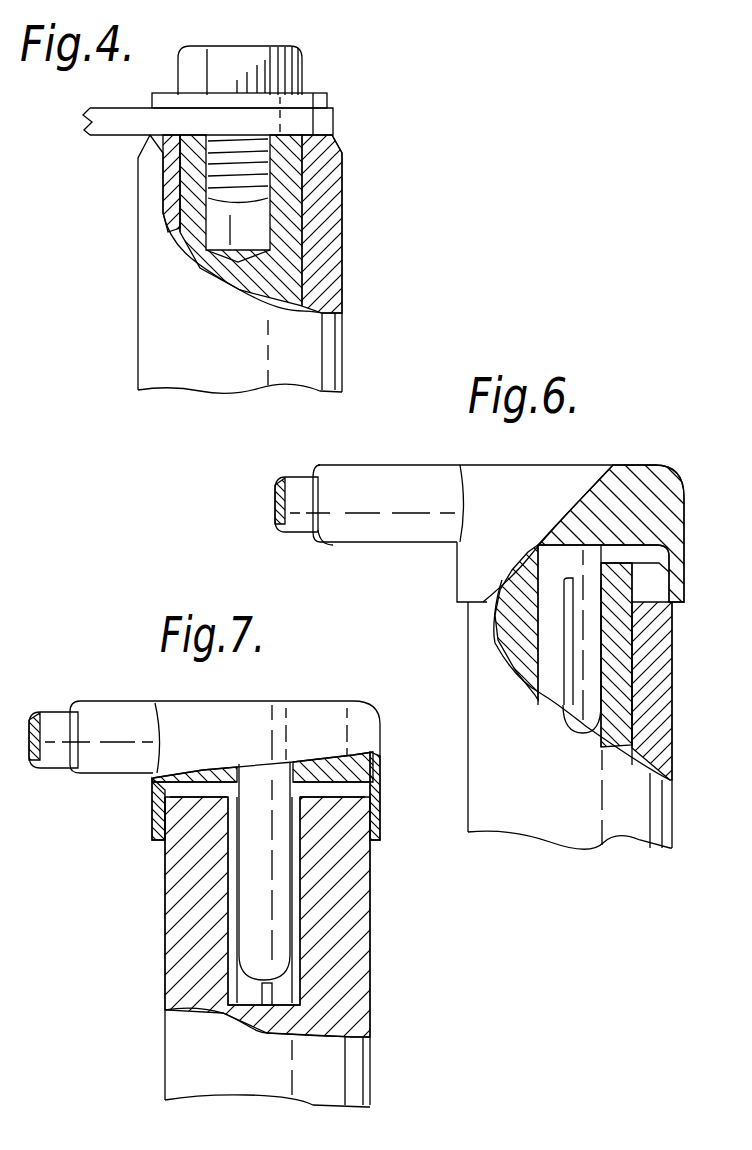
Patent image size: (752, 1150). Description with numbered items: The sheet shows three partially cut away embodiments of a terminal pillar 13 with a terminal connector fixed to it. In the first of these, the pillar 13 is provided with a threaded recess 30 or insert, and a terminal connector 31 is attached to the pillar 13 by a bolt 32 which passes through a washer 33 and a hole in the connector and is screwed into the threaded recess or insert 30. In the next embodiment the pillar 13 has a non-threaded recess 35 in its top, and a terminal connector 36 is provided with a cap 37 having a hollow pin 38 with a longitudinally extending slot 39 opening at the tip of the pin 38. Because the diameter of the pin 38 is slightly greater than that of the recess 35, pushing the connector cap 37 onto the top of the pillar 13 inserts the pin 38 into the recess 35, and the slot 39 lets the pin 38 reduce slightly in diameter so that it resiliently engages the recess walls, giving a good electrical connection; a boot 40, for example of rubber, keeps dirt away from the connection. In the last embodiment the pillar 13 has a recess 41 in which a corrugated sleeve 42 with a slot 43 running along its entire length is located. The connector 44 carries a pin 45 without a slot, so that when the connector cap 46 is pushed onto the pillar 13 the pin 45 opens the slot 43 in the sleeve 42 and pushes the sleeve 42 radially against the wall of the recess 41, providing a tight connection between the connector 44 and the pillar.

In FIG. 4, the terminal pillar 13 is at (328, 365).
In FIG. 6, the terminal pillar 13 is at (555, 817).
In FIG. 7, the terminal pillar 13 is at (180, 1042).
In FIG. 4, the threaded recess 30 is at (272, 222).
In FIG. 4, the terminal connector 31 is at (333, 127).
In FIG. 4, the bolt 32 is at (297, 75).
In FIG. 4, the washer 33 is at (330, 100).
In FIG. 6, the non-threaded recess 35 is at (603, 655).
In FIG. 6, the terminal connector 36 is at (438, 467).
In FIG. 6, the cap 37 is at (673, 476).
In FIG. 6, the hollow pin 38 is at (590, 620).
In FIG. 6, the slot 39 is at (572, 678).
In FIG. 6, the boot 40 is at (583, 465).
In FIG. 7, the recess 41 is at (300, 908).
In FIG. 7, the corrugated sleeve 42 is at (297, 925).
In FIG. 7, the slot 43 is at (270, 997).
In FIG. 7, the connector 44 is at (135, 703).
In FIG. 7, the pin 45 is at (282, 858).
In FIG. 7, the connector cap 46 is at (380, 722).